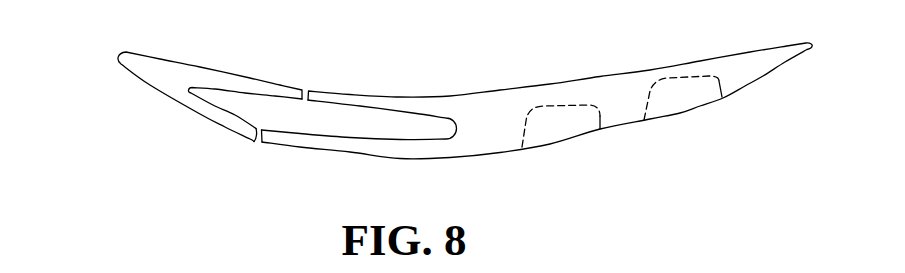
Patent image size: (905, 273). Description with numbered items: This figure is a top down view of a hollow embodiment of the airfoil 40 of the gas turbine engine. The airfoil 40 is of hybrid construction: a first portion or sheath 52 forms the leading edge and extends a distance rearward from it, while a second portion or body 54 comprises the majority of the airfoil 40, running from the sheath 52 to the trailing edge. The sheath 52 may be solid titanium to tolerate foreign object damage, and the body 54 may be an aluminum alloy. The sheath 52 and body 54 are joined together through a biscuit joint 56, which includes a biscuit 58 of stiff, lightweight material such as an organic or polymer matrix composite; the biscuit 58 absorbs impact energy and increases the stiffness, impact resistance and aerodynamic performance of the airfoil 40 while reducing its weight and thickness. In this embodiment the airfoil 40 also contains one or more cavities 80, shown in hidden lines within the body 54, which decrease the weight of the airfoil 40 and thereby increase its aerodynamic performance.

The airfoil 40 is at (134, 95).
The sheath 52 is at (160, 78).
The body 54 is at (614, 91).
The biscuit joint 56 is at (247, 144).
The biscuit 58 is at (312, 125).
The cavities 80 is at (557, 125).